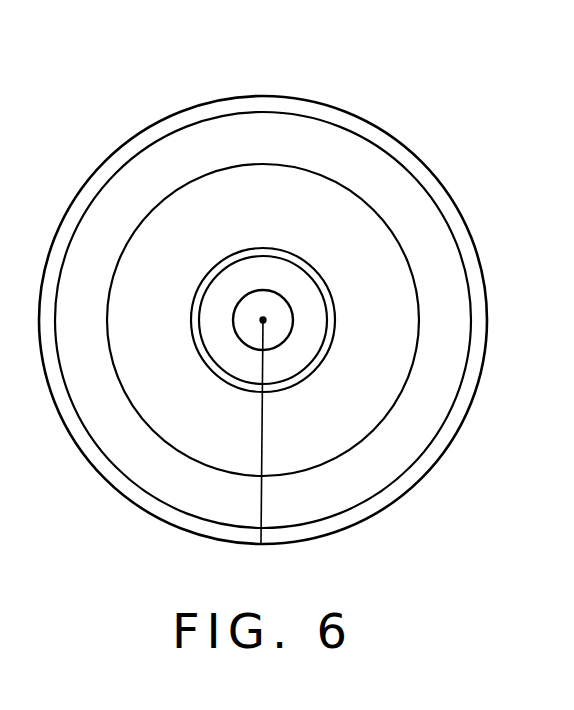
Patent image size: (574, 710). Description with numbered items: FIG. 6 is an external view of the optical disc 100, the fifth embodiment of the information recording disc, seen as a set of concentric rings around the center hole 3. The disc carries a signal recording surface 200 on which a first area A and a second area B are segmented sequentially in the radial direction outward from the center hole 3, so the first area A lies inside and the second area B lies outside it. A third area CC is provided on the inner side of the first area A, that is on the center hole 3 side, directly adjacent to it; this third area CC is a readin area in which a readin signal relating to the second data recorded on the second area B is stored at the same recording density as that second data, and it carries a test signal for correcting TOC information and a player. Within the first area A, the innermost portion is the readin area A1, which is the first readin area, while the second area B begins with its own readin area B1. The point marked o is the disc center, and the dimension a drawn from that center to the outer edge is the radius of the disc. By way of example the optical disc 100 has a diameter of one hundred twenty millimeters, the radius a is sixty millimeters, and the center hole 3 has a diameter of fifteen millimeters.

The optical disc 100 is at (300, 55).
The signal recording surface 200 is at (338, 128).
The center hole 3 is at (256, 289).
The first area A is at (276, 318).
The readin area AI A1 is at (159, 252).
The second area B is at (263, 320).
The readin area BI1 B1 is at (124, 200).
The third area CC is at (328, 312).
The disc center o is at (263, 320).
The radius a is at (272, 431).